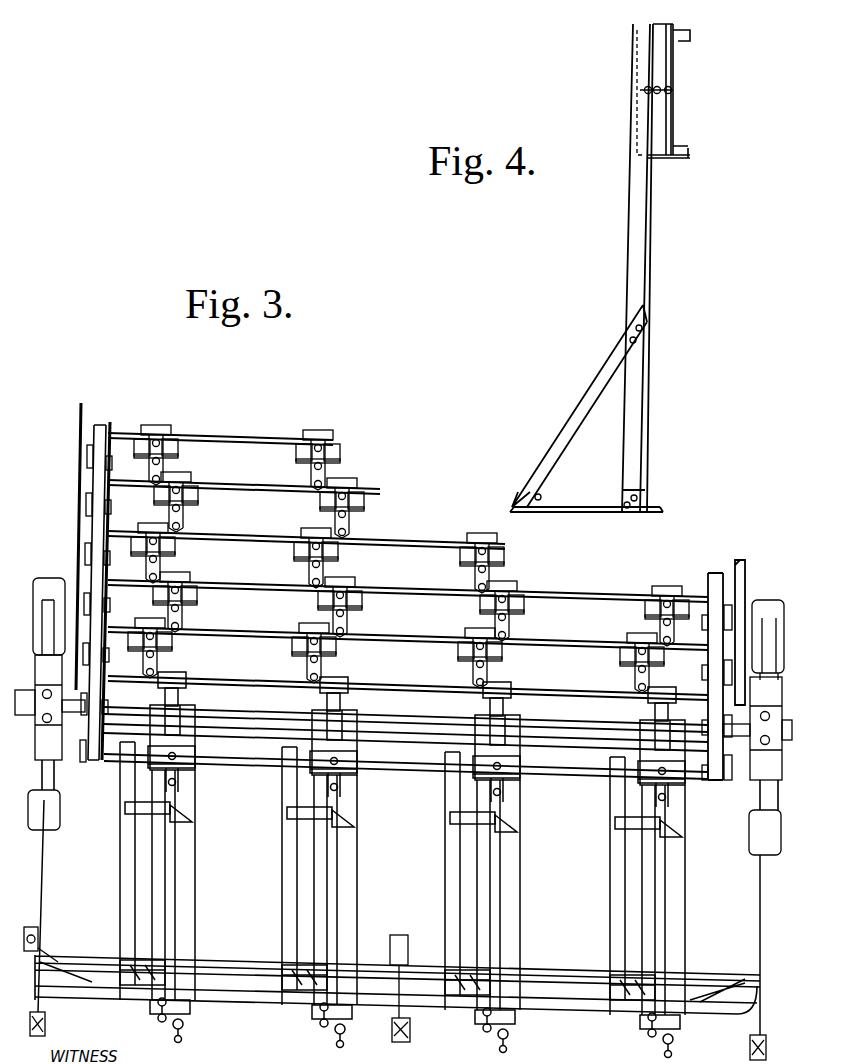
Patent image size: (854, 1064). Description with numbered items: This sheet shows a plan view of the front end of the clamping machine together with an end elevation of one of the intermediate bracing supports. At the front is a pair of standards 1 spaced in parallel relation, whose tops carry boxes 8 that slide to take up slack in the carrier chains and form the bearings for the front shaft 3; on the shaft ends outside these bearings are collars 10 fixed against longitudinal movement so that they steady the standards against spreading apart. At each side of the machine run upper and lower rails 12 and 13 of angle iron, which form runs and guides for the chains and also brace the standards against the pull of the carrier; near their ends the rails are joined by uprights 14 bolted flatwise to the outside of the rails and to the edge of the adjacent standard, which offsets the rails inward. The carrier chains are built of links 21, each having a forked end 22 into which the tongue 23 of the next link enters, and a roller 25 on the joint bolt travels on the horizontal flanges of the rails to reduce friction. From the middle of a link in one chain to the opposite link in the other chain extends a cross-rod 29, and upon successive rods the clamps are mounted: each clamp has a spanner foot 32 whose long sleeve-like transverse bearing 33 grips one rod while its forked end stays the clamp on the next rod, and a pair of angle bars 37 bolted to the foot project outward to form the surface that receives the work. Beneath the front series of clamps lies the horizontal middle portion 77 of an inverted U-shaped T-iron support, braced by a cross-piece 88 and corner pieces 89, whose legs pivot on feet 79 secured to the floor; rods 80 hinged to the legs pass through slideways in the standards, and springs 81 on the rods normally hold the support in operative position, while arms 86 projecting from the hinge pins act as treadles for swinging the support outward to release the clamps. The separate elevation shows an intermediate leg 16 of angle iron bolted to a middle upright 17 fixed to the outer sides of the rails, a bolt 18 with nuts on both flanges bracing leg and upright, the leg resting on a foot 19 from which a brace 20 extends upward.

In FIG. 3, the front standards 1 is at (48, 580).
In FIG. 3, the front shaft 3 is at (405, 720).
In FIG. 3, the boxes 8 is at (37, 730).
In FIG. 3, the collars 10 is at (35, 690).
In FIG. 4, the upper rails 12 is at (690, 36).
In FIG. 3, the upper rails 12 is at (78, 444).
In FIG. 4, the lower rails 13 is at (688, 159).
In FIG. 3, the uprights 14 is at (62, 660).
In FIG. 4, the legs 16 is at (636, 278).
In FIG. 4, the middle uprights 17 is at (673, 112).
In FIG. 4, the bolt 18 is at (644, 91).
In FIG. 4, the foot 19 is at (586, 512).
In FIG. 4, the brace 20 is at (586, 423).
In FIG. 3, the links 21 is at (100, 530).
In FIG. 3, the forked end 22 is at (110, 505).
In FIG. 3, the tongue 23 is at (108, 558).
In FIG. 3, the roller 25 is at (98, 430).
In FIG. 3, the cross-rod 29 is at (245, 436).
In FIG. 3, the spanner foot 32 is at (185, 695).
In FIG. 3, the transverse bearing 33 is at (178, 676).
In FIG. 3, the angle bars 37 is at (128, 870).
In FIG. 3, the middle portion 77 is at (246, 998).
In FIG. 3, the feet 79 is at (42, 932).
In FIG. 3, the rods 80 is at (42, 875).
In FIG. 3, the springs 81 is at (408, 946).
In FIG. 3, the arms 86 is at (45, 1020).
In FIG. 3, the cross-piece 88 is at (228, 968).
In FIG. 3, the corner pieces 89 is at (80, 972).